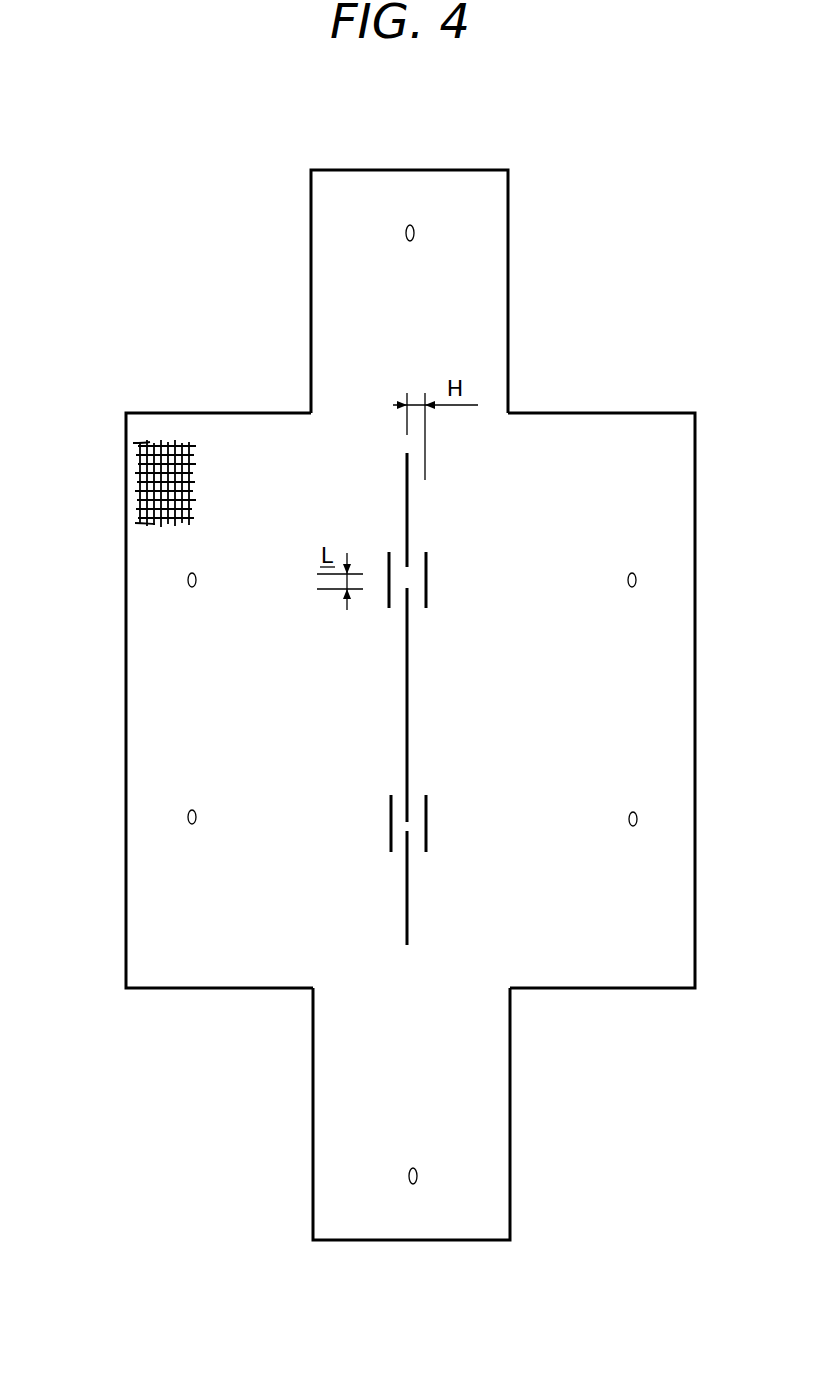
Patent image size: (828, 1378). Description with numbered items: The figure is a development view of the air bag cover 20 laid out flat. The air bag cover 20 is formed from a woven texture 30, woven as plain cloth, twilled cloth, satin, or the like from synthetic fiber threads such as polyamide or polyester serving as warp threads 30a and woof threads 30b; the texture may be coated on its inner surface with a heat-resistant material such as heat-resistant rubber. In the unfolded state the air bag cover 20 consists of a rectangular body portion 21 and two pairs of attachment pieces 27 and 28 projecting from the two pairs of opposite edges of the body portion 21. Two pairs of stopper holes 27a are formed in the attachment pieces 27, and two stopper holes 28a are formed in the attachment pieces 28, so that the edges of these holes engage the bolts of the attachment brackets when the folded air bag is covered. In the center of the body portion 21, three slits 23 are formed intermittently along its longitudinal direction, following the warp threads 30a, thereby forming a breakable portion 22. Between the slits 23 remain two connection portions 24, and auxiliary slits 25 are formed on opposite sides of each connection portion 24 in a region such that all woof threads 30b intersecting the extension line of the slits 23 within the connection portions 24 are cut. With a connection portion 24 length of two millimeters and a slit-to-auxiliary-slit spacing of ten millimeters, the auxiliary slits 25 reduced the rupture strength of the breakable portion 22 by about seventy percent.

The air bag cover 20 is at (218, 270).
The body portion 21 is at (490, 467).
The breakable portion 22 is at (358, 788).
The slits 23 is at (408, 500).
The connection portions 24 is at (408, 578).
The auxiliary slits 25 is at (428, 597).
The attachment pieces 27 is at (137, 953).
The stopper holes 27a is at (187, 582).
The attachment pieces 28 is at (490, 226).
The stopper holes 28a is at (412, 224).
The woven texture 30 is at (126, 452).
The warp threads 30a is at (152, 440).
The woof threads 30b is at (140, 522).